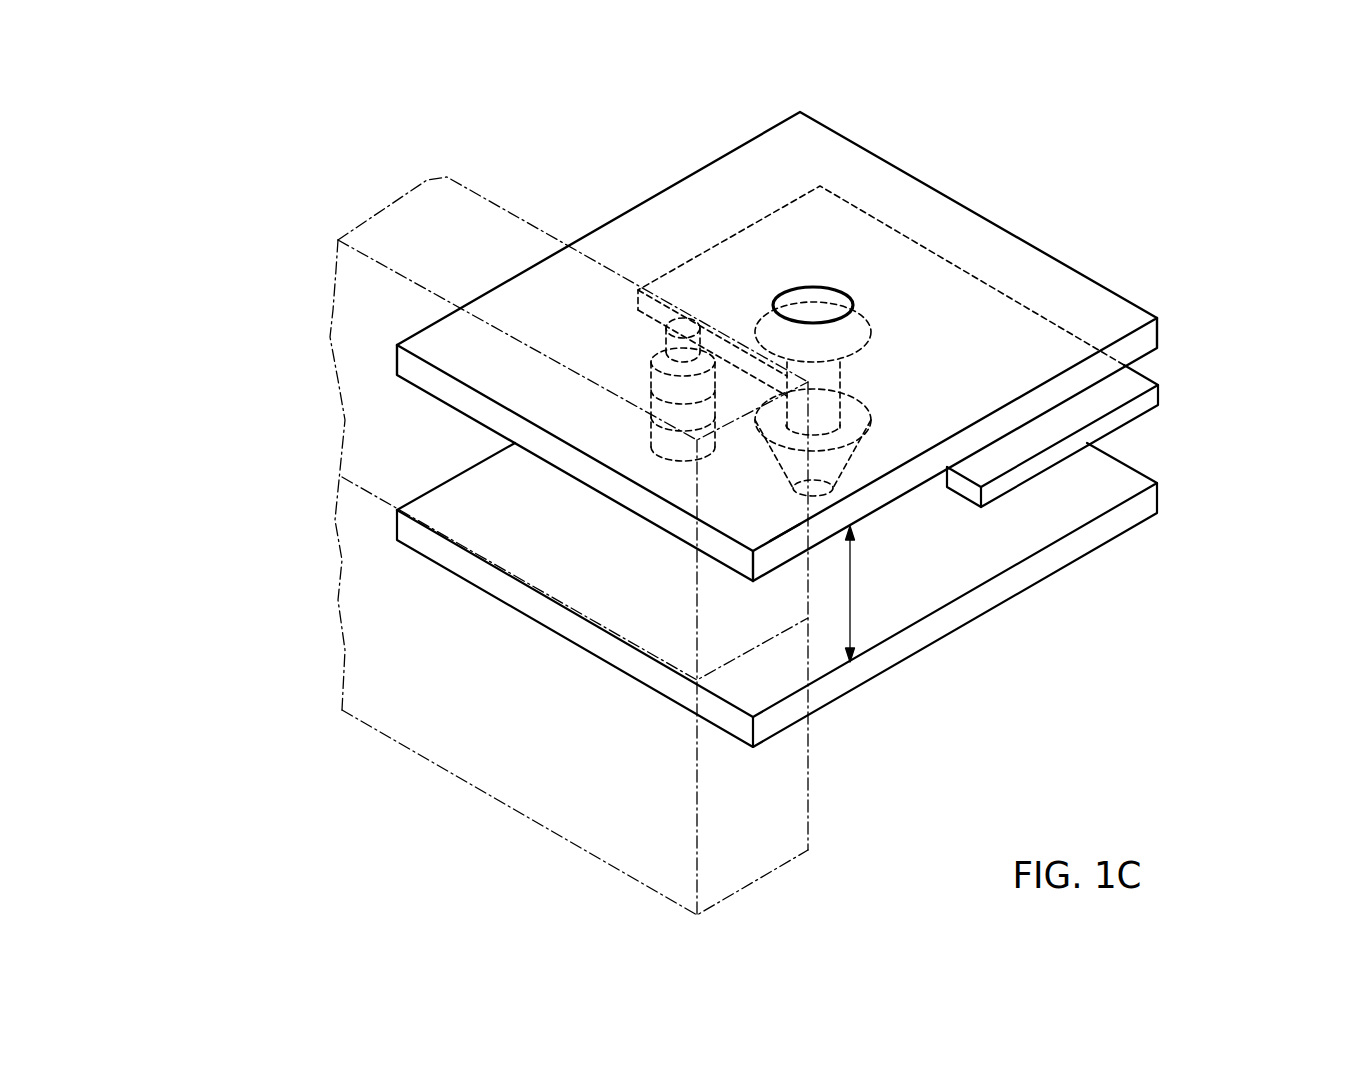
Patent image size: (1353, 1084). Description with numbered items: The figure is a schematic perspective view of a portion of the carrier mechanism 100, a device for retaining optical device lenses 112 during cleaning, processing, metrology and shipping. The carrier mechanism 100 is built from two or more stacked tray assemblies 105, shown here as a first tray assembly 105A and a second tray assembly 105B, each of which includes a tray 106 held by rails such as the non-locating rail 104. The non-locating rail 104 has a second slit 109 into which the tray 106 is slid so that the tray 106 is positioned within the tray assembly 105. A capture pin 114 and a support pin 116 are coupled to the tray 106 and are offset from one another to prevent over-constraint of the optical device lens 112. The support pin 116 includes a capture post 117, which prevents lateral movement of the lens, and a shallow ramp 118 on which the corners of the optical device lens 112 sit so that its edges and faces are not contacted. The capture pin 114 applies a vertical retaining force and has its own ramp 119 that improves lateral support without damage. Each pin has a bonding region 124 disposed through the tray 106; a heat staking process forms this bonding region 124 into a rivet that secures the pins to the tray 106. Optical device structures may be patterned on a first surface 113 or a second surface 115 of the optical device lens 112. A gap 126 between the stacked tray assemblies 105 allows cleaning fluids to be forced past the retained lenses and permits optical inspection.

The carrier mechanism 100 is at (320, 121).
The non-locating rail 104 is at (500, 228).
The tray assembly 105 is at (261, 398).
The first tray assembly 105A is at (309, 590).
The second tray assembly 105B is at (308, 324).
The tray 106 is at (1133, 300).
The second slit 109 is at (778, 533).
The optical device lens 112 is at (947, 346).
The first surface 113 is at (947, 346).
The capture pin 114 is at (828, 378).
The second surface 115 is at (1157, 437).
The support pin 116 is at (649, 340).
The capture post 117 is at (670, 343).
The ramp 118 is at (712, 352).
The ramp 119 is at (855, 443).
The bonding region 124 is at (818, 303).
The gap 126 is at (853, 598).